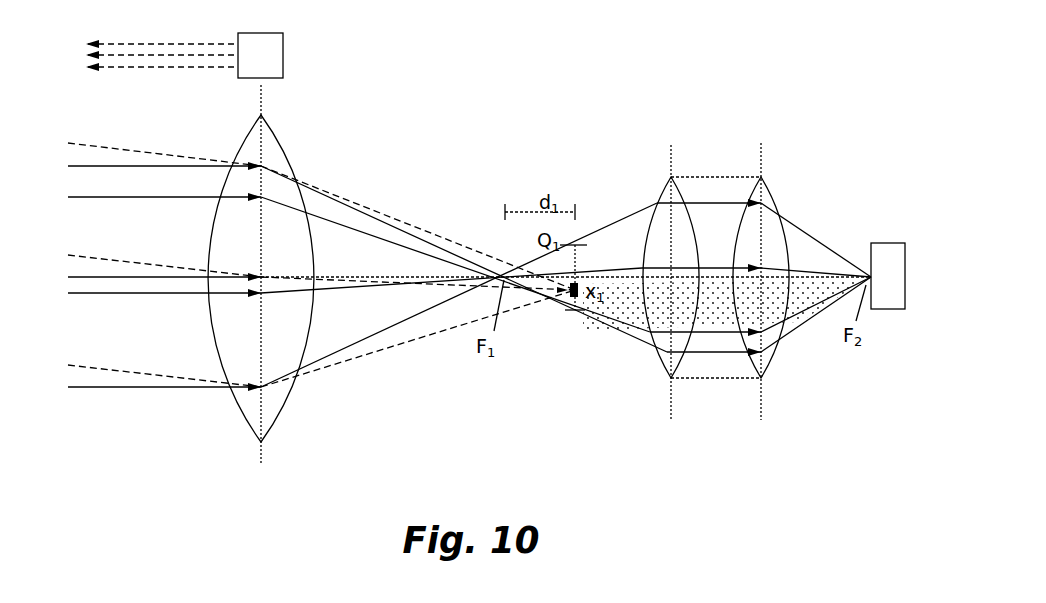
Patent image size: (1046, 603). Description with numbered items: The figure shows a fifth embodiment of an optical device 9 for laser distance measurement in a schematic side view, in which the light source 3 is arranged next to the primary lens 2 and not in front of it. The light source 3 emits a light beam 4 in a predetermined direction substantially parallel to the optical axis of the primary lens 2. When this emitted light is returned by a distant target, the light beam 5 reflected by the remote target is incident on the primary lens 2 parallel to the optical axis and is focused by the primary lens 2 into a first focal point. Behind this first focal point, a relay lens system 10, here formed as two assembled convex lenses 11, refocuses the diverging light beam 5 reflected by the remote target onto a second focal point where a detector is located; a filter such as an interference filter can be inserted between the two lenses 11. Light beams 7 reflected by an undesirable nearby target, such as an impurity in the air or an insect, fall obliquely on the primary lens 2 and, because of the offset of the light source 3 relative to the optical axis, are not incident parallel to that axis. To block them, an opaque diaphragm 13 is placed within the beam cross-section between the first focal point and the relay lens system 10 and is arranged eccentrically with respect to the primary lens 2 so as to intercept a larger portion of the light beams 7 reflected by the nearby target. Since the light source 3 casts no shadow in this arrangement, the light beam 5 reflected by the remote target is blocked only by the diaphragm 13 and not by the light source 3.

The primary lens 2 is at (276, 148).
The light source 3 is at (266, 39).
The emitted light beam 4 is at (156, 43).
The light beam reflected by the remote target 5 is at (183, 390).
The light beam reflected by the nearby target 7 is at (443, 240).
The optical device 9 is at (825, 64).
The relay lens system 10 is at (715, 260).
The convex lenses 11 is at (665, 198).
The diaphragm 13 is at (568, 300).